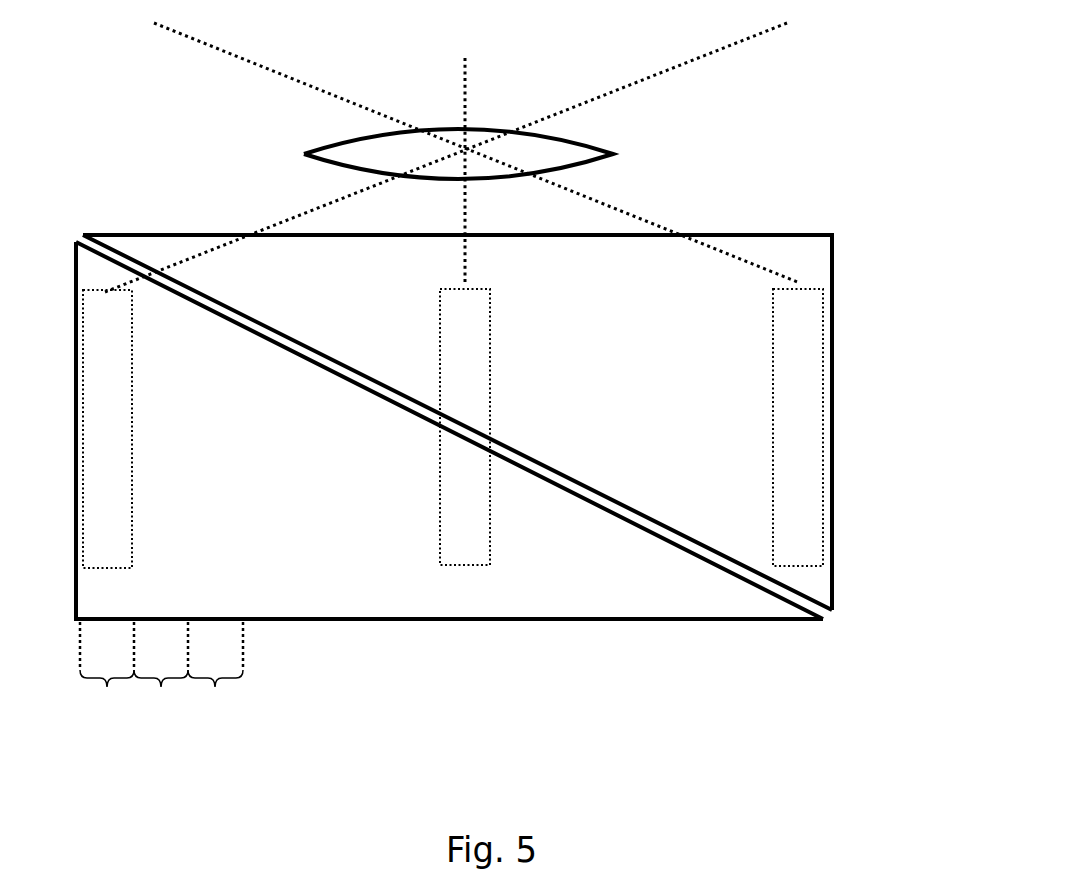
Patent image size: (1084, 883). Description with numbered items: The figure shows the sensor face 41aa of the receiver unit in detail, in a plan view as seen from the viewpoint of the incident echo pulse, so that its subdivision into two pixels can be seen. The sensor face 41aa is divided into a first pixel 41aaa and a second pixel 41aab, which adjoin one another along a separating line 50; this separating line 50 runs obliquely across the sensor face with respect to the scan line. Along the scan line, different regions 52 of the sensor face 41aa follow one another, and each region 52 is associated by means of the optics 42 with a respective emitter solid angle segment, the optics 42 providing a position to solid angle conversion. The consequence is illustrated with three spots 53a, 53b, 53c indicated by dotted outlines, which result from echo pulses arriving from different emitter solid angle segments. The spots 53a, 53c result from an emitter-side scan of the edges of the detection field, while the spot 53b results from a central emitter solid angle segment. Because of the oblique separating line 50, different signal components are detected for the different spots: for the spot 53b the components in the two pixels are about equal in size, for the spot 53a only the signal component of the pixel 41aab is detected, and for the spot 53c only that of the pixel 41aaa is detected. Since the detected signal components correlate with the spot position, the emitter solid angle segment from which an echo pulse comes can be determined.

The sensor face 41aa is at (833, 155).
The pixel 41aaa is at (157, 257).
The pixel 41aab is at (312, 406).
The optics 42 is at (553, 155).
The separating line 50 is at (630, 515).
The regions 52 is at (107, 712).
The spot 53a is at (99, 545).
The spot 53b is at (465, 527).
The spot 53c is at (793, 483).